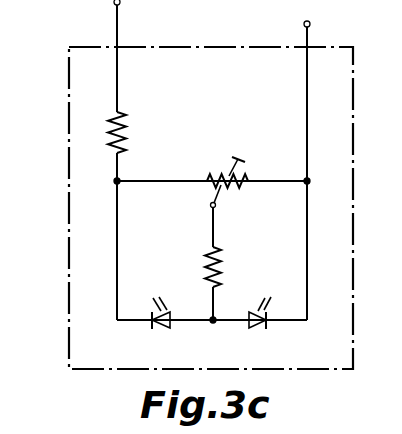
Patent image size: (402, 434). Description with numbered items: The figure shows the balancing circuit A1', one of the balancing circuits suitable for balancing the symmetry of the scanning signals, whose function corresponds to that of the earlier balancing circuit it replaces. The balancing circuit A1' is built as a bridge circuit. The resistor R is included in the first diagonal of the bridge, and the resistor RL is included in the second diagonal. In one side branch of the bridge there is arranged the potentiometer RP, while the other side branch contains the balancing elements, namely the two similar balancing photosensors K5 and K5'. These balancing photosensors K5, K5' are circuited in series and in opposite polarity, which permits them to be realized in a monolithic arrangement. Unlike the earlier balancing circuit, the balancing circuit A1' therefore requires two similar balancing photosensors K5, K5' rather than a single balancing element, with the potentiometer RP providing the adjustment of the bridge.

The balancing circuit A1' is at (185, 208).
The resistor RL is at (127, 130).
The potentiometer RP is at (232, 186).
The resistor R is at (222, 260).
The balancing photosensor K5 is at (178, 332).
The balancing photosensor K5' is at (276, 332).